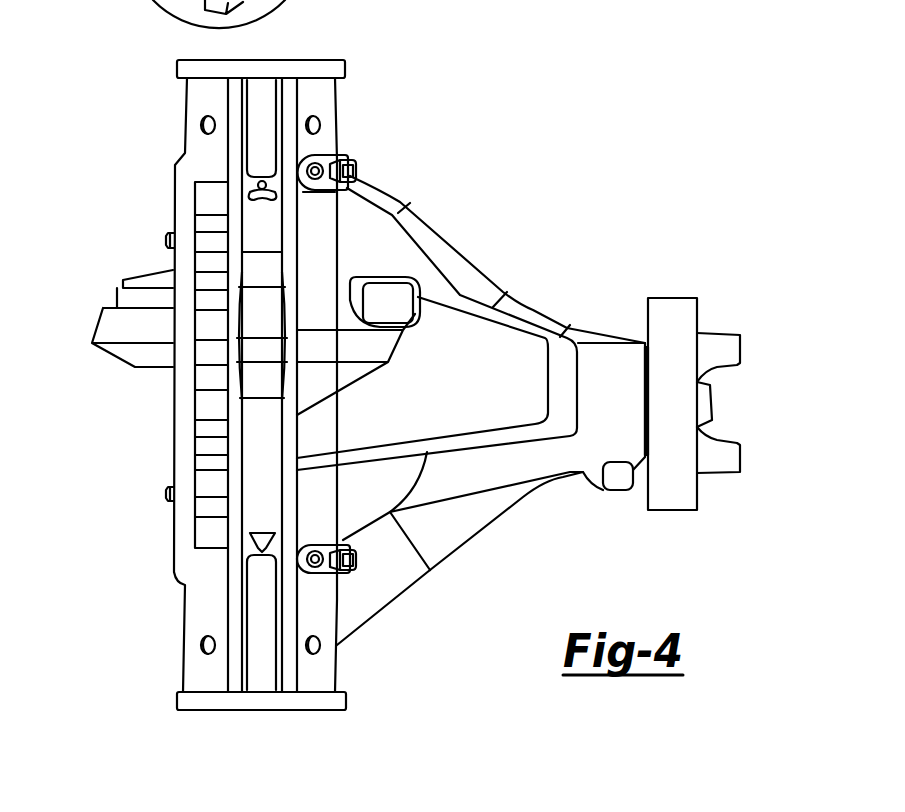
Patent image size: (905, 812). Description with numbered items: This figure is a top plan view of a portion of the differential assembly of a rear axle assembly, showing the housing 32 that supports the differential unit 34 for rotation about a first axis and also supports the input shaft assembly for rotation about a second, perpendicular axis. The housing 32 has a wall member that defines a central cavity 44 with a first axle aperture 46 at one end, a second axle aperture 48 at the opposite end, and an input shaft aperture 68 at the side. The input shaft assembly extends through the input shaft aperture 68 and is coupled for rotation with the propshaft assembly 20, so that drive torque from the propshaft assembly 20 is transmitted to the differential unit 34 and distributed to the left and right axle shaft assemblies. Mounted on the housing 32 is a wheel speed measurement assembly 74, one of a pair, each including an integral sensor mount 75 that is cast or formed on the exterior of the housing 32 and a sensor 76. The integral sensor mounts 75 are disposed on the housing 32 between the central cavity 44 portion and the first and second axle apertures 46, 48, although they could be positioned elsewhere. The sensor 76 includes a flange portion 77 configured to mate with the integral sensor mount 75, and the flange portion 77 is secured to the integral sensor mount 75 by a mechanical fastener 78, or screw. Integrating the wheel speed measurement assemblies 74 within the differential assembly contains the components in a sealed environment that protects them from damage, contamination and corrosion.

The propshaft assembly 20 is at (774, 362).
The housing 32 is at (343, 435).
The differential unit 34 is at (113, 308).
The central cavity 44 is at (106, 398).
The first axle aperture 46 is at (322, 50).
The second axle aperture 48 is at (320, 720).
The input shaft aperture 68 is at (617, 433).
The wheel speed measurement assembly 74 is at (378, 173).
The integral sensor mount 75 is at (322, 574).
The sensor 76 is at (356, 167).
The flange portion 77 is at (297, 157).
The mechanical fastener 78 is at (320, 166).